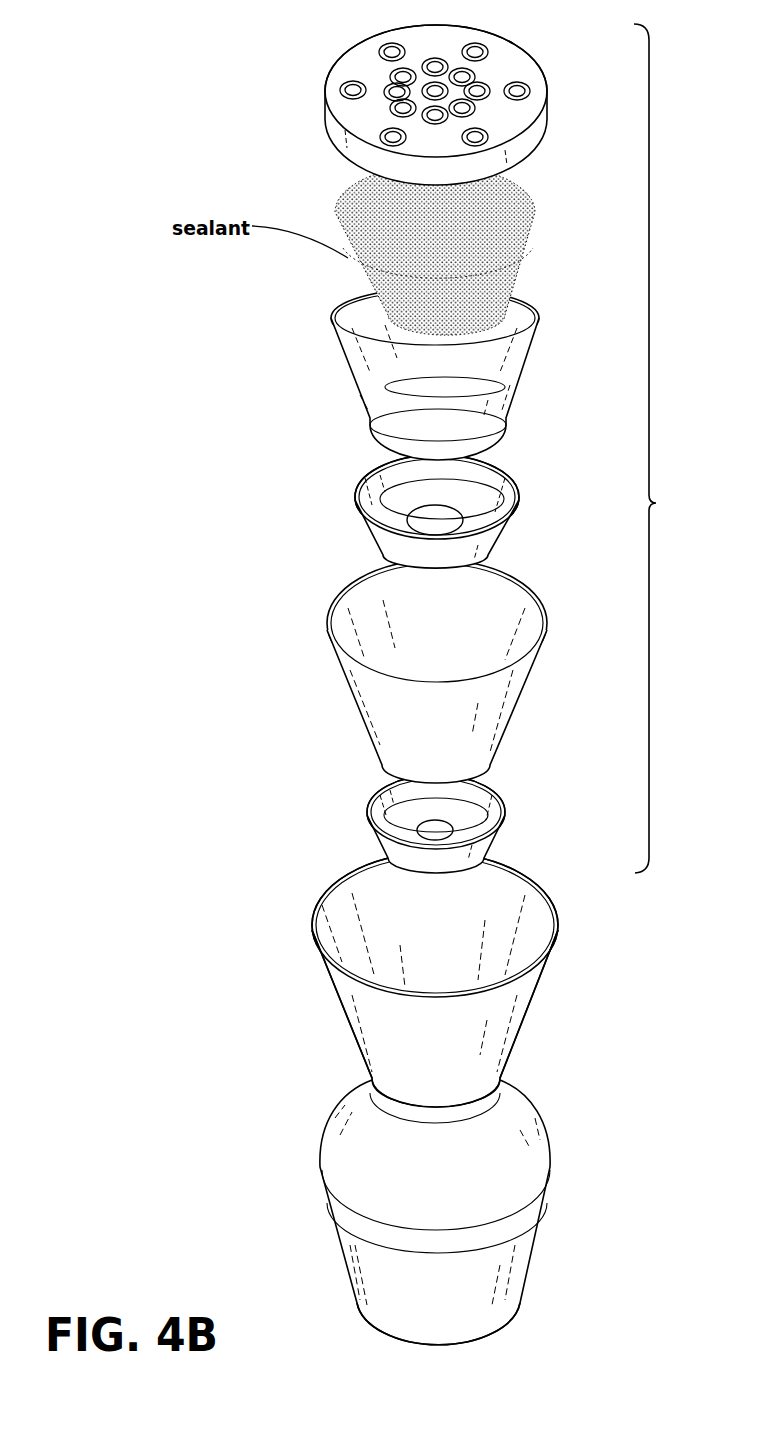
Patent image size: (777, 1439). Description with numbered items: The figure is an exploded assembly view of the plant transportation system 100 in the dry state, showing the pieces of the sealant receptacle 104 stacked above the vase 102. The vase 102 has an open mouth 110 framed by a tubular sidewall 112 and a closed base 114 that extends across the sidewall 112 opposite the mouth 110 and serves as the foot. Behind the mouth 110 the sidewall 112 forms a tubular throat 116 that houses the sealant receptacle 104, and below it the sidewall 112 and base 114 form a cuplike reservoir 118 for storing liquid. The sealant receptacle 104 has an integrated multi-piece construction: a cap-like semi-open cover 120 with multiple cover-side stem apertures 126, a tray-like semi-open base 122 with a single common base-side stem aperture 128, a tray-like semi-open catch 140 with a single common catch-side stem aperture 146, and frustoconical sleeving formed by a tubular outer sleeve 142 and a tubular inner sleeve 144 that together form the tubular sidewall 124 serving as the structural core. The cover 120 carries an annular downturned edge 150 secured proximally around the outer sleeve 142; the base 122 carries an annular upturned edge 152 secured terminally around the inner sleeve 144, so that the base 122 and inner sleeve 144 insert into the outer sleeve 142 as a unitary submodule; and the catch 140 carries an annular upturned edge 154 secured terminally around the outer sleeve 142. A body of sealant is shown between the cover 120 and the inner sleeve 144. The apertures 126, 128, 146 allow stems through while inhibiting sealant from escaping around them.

The plant transportation system 100 is at (503, 1212).
The vase 102 is at (503, 980).
The sealant receptacle 104 is at (666, 448).
The open mouth 110 is at (528, 920).
The tubular sidewall 112 is at (522, 1027).
The closed base 114 is at (485, 1341).
The tubular throat 116 is at (530, 1002).
The cuplike reservoir 118 is at (550, 1172).
The semi-open cover 120 is at (328, 90).
The semi-open base 122 is at (367, 535).
The tubular sidewall 124 is at (359, 535).
The cover-side stem apertures 126 is at (344, 76).
The base-side stem aperture 128 is at (358, 504).
The semi-open catch 140 is at (377, 840).
The tubular outer sleeve 142 is at (353, 697).
The tubular inner sleeve 144 is at (355, 403).
The catch-side stem aperture 146 is at (354, 815).
The annular downturned edge 150 is at (377, 95).
The annular upturned edge 152 is at (358, 483).
The annular upturned edge 154 is at (372, 782).